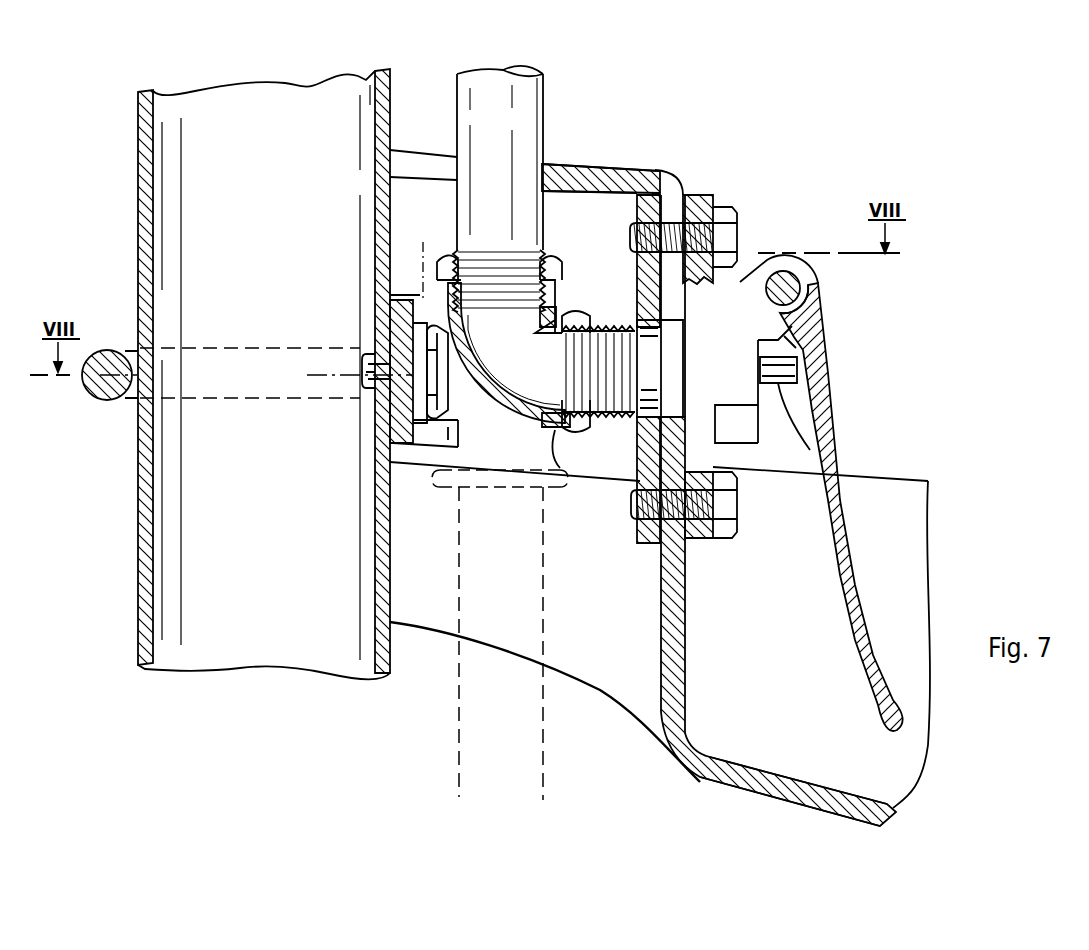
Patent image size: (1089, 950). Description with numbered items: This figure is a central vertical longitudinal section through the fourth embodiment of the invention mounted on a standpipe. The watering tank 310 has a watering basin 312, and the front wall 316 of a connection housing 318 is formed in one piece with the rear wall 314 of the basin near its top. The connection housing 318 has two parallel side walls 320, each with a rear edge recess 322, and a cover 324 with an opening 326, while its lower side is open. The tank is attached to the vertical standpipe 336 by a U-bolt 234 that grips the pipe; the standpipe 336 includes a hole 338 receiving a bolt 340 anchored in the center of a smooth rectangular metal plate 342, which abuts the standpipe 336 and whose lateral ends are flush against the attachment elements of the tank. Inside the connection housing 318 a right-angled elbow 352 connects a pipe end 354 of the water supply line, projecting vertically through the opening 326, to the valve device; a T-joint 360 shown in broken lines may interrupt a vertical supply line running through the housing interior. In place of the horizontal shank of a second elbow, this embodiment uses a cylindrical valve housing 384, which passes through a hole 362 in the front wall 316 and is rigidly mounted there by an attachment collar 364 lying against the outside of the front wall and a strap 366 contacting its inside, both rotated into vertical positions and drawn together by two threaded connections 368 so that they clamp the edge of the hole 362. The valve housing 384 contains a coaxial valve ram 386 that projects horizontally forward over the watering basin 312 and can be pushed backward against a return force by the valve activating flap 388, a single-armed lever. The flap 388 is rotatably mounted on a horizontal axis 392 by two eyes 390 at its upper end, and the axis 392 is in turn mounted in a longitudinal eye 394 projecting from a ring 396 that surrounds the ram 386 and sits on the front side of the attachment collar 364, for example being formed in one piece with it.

The U-bolt 234 is at (118, 348).
The watering tank 310 is at (728, 784).
The watering basin 312 is at (802, 796).
The rear wall 314 is at (672, 590).
The front wall 316 is at (652, 462).
The connection housing 318 is at (600, 166).
The side walls 320 is at (600, 525).
The rear edge recess 322 is at (457, 433).
The cover 324 is at (652, 170).
The opening 326 is at (555, 164).
The standpipe 336 is at (218, 655).
The hole 338 is at (372, 390).
The bolt 340 is at (388, 348).
The metal plate 342 is at (403, 290).
The right-angled elbow 352 is at (552, 322).
The pipe end 354 is at (528, 94).
The T-joint 360 is at (462, 362).
The hole 362 is at (668, 413).
The attachment collar 364 is at (702, 200).
The strap 366 is at (648, 278).
The threaded connections 368 is at (628, 238).
The cylindrical valve housing 384 is at (565, 382).
The valve ram 386 is at (792, 372).
The valve activating flap 388 is at (831, 456).
The eyes 390 is at (818, 276).
The horizontal axis 392 is at (787, 280).
The longitudinal eye 394 is at (797, 325).
The ring 396 is at (748, 432).